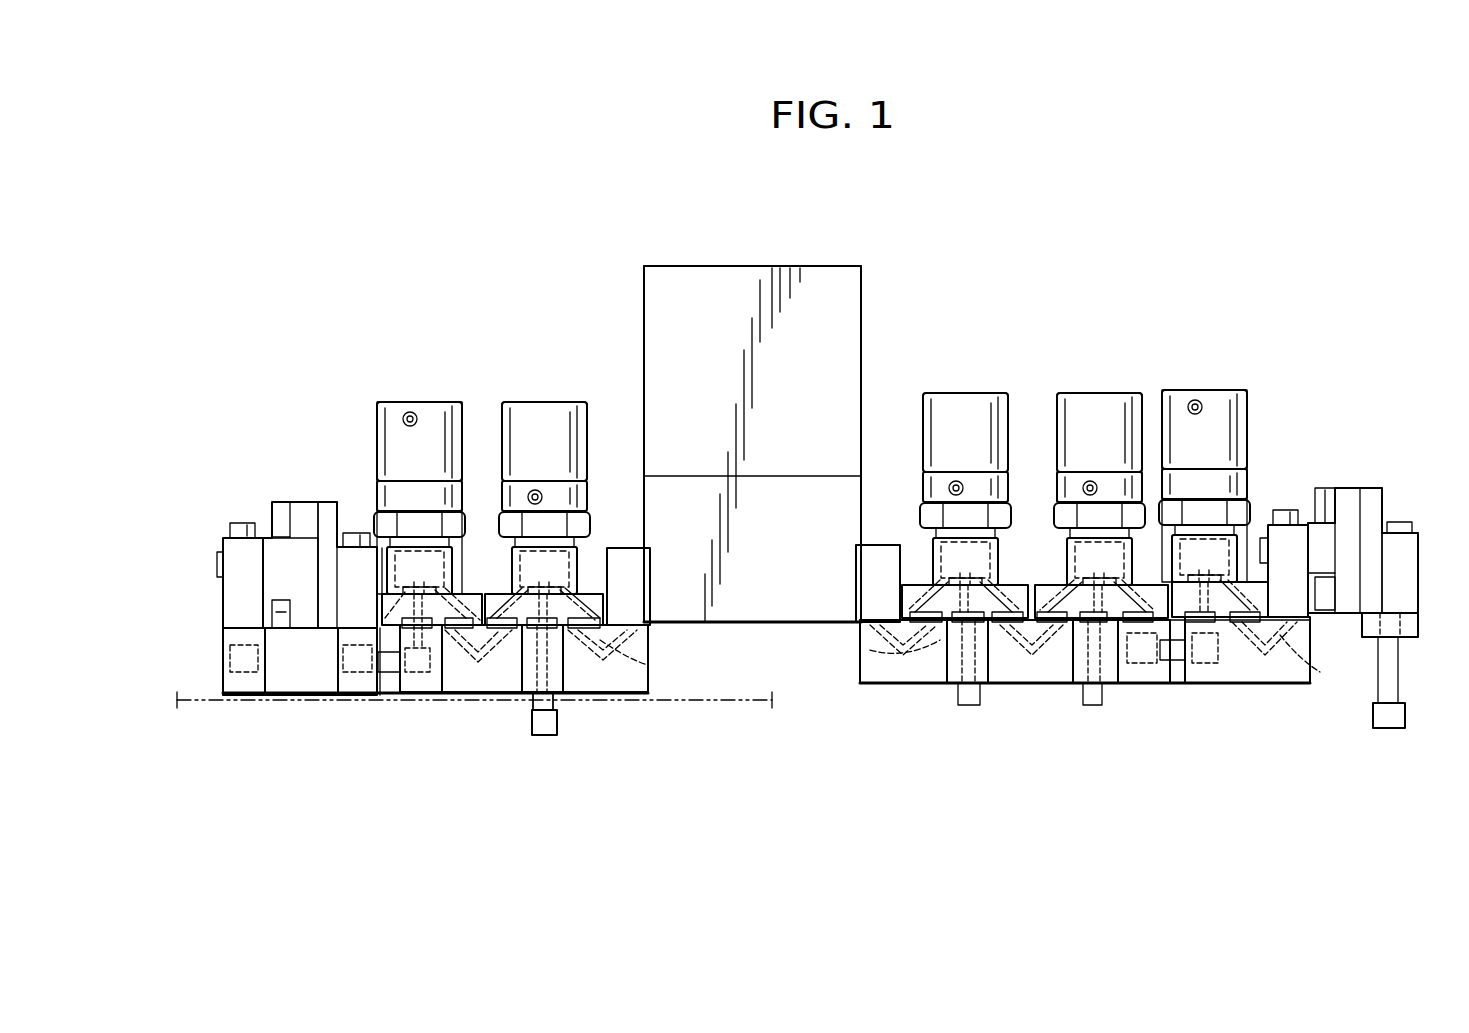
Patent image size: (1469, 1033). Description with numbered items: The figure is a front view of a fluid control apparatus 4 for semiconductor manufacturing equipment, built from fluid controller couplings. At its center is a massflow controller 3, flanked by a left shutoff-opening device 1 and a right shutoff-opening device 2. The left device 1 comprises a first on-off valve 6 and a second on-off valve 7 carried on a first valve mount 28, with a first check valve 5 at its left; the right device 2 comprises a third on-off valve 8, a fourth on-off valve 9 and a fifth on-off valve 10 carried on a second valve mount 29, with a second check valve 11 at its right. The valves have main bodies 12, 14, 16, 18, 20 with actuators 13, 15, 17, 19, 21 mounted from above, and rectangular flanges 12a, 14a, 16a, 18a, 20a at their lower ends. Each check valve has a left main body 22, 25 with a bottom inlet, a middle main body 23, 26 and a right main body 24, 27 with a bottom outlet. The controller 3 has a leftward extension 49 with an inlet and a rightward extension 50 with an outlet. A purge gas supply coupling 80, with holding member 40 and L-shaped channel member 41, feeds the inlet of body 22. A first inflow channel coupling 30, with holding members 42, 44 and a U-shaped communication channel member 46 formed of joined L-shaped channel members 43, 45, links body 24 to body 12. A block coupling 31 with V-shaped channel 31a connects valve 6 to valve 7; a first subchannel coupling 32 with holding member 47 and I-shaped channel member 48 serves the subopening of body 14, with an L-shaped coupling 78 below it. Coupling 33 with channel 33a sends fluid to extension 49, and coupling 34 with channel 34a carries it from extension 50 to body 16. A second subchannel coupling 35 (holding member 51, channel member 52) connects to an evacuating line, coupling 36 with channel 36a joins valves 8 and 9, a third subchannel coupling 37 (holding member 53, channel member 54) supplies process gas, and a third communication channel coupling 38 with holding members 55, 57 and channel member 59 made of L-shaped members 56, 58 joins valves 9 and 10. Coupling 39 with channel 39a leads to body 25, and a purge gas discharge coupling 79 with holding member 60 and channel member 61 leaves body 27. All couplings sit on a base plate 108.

The shutoff-opening device 1 is at (465, 376).
The shutoff-opening device 2 is at (1183, 365).
The massflow controller 3 is at (825, 266).
The fluid control apparatus 4 is at (905, 318).
The first check valve 5 is at (303, 503).
The first on-off valve 6 is at (406, 400).
The second on-off valve 7 is at (536, 400).
The third on-off valve 8 is at (957, 392).
The fourth on-off valve 9 is at (1087, 392).
The fifth on-off valve 10 is at (1294, 380).
The second check valve 11 is at (1393, 530).
The main body 12 is at (452, 547).
The flange 12a is at (465, 603).
The actuator 13 is at (385, 453).
The main body 14 is at (577, 550).
The flange 14a is at (586, 600).
The actuator 15 is at (563, 430).
The main body 16 is at (1000, 548).
The flange 16a is at (1010, 603).
The actuator 17 is at (990, 405).
The main body 18 is at (1130, 488).
The flange 18a is at (1153, 585).
The actuator 19 is at (1110, 400).
The main body 20 is at (1244, 540).
The flange 20a is at (1255, 593).
The actuator 21 is at (1233, 415).
The left main body 22 is at (237, 548).
The middle main body 23 is at (272, 547).
The right main body 24 is at (328, 513).
The left main body 25 is at (1298, 598).
The middle main body 26 is at (1340, 540).
The right main body 27 is at (1408, 577).
The first valve mount 28 is at (497, 690).
The second valve mount 29 is at (1044, 685).
The first inflow channel coupling 30 is at (404, 690).
The coupling 31 is at (515, 690).
The V-shaped channel 31a is at (466, 690).
The first subchannel coupling 32 is at (560, 655).
The coupling 33 is at (620, 680).
The V-shaped channel 33a is at (645, 655).
The coupling 34 is at (873, 688).
The V-shaped channel 34a is at (870, 650).
The second subchannel coupling 35 is at (955, 688).
The coupling 36 is at (1037, 690).
The V-shaped channel 36a is at (1003, 672).
The third subchannel coupling 37 is at (1105, 688).
The third communication channel coupling 38 is at (1160, 688).
The coupling 39 is at (1276, 683).
The V-shaped channel 39a is at (1305, 665).
The holding member 40 is at (242, 688).
The L-shaped channel member 41 is at (232, 637).
The holding member 42 is at (340, 688).
The L-shaped channel member 43 is at (340, 638).
The holding member 44 is at (420, 690).
The L-shaped channel member 45 is at (405, 690).
The U-shaped communication channel member 46 is at (380, 695).
The holding member 47 is at (565, 655).
The I-shaped channel member 48 is at (543, 700).
The leftward extension 49 is at (650, 580).
The rightward extension 50 is at (858, 590).
The holding member 51 is at (950, 690).
The L-shaped channel member 52 is at (945, 650).
The holding member 53 is at (1090, 690).
The L-shaped channel member 54 is at (1100, 690).
The holding member 55 is at (1166, 690).
The L-shaped channel member 56 is at (1140, 665).
The holding member 57 is at (1207, 688).
The L-shaped channel member 58 is at (1215, 640).
The communication channel member 59 is at (1205, 665).
The holding member 60 is at (1408, 628).
The L-shaped channel member 61 is at (1393, 665).
The L-shaped coupling 78 is at (557, 735).
The purge gas discharge coupling 79 is at (1400, 700).
The purge gas supply coupling 80 is at (227, 686).
The base plate 108 is at (277, 705).